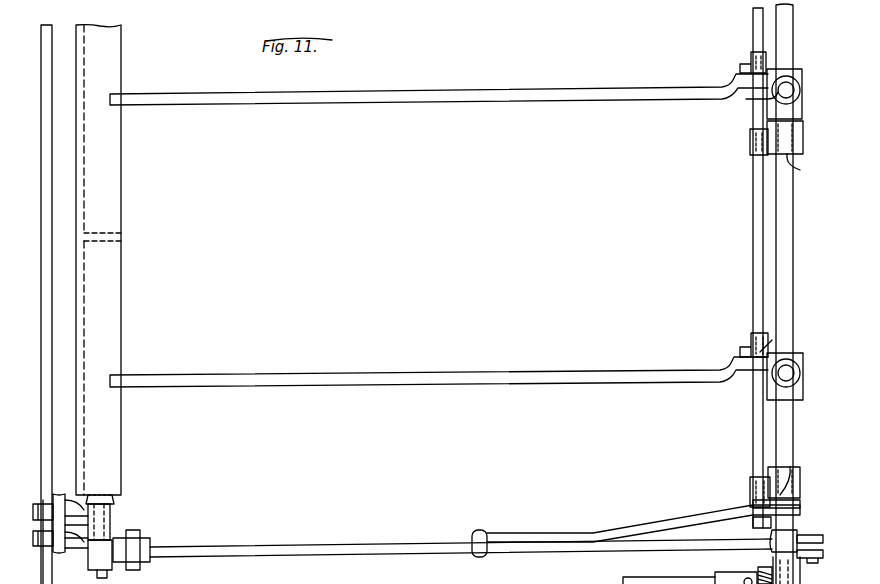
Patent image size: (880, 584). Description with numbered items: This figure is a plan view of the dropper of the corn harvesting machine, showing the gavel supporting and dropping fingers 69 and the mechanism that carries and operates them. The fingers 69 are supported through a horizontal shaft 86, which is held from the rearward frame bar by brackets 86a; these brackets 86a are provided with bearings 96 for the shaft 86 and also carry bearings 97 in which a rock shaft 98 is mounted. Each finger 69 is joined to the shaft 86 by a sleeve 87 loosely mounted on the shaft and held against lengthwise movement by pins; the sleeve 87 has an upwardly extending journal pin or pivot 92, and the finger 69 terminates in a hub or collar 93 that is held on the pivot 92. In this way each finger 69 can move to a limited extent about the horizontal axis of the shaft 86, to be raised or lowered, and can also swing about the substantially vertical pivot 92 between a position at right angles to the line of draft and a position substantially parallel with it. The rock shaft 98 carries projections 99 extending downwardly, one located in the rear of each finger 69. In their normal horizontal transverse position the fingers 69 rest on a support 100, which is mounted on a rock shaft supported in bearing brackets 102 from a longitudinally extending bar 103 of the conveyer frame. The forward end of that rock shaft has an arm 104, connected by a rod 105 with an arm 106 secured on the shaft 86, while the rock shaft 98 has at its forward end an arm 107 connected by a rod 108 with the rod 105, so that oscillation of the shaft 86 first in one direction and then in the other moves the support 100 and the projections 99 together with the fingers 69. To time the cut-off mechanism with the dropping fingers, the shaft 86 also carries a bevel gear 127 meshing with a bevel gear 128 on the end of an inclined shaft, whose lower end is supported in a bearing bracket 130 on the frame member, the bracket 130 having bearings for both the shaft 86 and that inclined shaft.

The gavel supporting and dropping fingers 69 is at (450, 90).
The shaft 86 is at (790, 36).
The brackets 86a is at (790, 470).
The sleeve 87 is at (800, 110).
The journal pin or pivot 92 is at (792, 84).
The hub or collar 93 is at (790, 353).
The bearings 96 is at (803, 140).
The bearings 97 is at (750, 142).
The rock shaft 98 is at (757, 213).
The projections 99 is at (745, 67).
The support 100 is at (122, 178).
The bearing brackets 102 is at (121, 490).
The longitudinally extending bar 103 is at (46, 458).
The arm 104 is at (120, 533).
The rod 105 is at (343, 532).
The arm 106 is at (832, 526).
The arm 107 is at (758, 502).
The rod 108 is at (587, 520).
The bevel gear 127 is at (804, 570).
The bevel gear 128 is at (760, 572).
The bearing bracket 130 is at (708, 575).